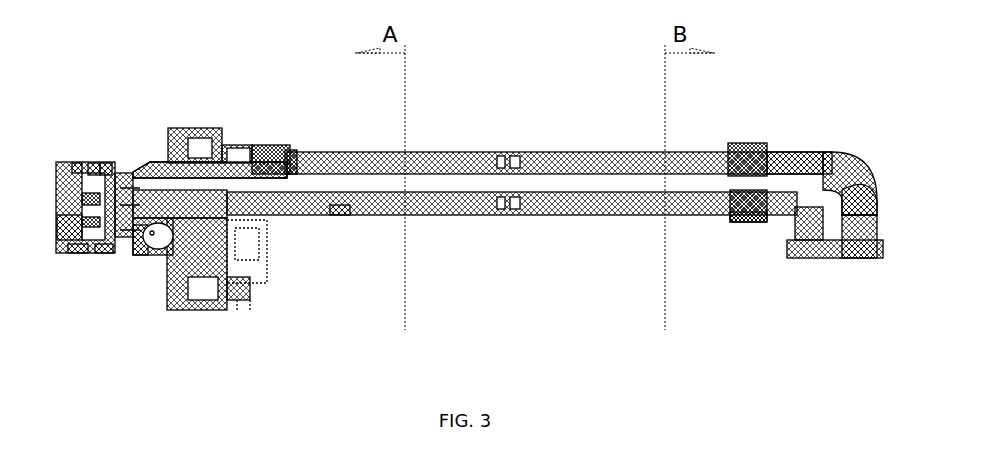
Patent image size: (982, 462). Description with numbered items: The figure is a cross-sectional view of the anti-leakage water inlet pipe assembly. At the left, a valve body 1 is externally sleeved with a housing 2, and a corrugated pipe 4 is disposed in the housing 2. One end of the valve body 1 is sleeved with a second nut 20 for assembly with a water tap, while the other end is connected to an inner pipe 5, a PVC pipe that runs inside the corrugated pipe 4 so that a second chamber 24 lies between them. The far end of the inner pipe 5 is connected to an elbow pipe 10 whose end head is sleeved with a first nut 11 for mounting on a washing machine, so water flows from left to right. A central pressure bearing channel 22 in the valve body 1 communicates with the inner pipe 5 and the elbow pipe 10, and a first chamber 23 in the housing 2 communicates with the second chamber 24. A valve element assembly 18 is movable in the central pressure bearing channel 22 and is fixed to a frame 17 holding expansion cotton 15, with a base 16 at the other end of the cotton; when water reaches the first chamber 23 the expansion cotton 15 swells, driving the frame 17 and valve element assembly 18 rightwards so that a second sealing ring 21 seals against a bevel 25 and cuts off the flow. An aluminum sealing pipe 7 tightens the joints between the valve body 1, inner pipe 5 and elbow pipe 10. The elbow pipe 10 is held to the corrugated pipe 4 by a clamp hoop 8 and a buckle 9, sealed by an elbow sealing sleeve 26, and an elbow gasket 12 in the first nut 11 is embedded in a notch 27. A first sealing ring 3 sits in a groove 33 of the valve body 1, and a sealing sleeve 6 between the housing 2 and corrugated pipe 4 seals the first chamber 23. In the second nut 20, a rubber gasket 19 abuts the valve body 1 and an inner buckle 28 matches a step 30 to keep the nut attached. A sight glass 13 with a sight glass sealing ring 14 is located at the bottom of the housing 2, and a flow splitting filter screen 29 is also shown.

The valve body 1 is at (167, 165).
The housing 2 is at (214, 144).
The first sealing ring 3 is at (180, 128).
The corrugated pipe 4 is at (393, 152).
The inner pipe 5 is at (377, 152).
The sealing sleeve 6 is at (267, 144).
The aluminum sealing pipe 7 is at (292, 152).
The clamp hoop 8 is at (737, 143).
The buckle 9 is at (772, 152).
The elbow pipe 10 is at (820, 152).
The first nut 11 is at (866, 185).
The elbow gasket 12 is at (808, 259).
The sight glass 13 is at (237, 312).
The sight glass sealing ring 14 is at (252, 312).
The expansion cotton 15 is at (258, 262).
The base 16 is at (170, 250).
The frame 17 is at (268, 230).
The valve element assembly 18 is at (105, 256).
The rubber gasket 19 is at (57, 183).
The second nut 20 is at (77, 160).
The second sealing ring 21 is at (140, 252).
The central pressure bearing channel 22 is at (162, 165).
The first chamber 23 is at (252, 290).
The second chamber 24 is at (340, 216).
The bevel 25 is at (57, 230).
The elbow sealing sleeve 26 is at (745, 224).
The notch 27 is at (848, 259).
The inner buckle 28 is at (90, 160).
The flow splitting filter screen 29 is at (80, 255).
The step 30 is at (100, 160).
The groove 33 is at (188, 310).